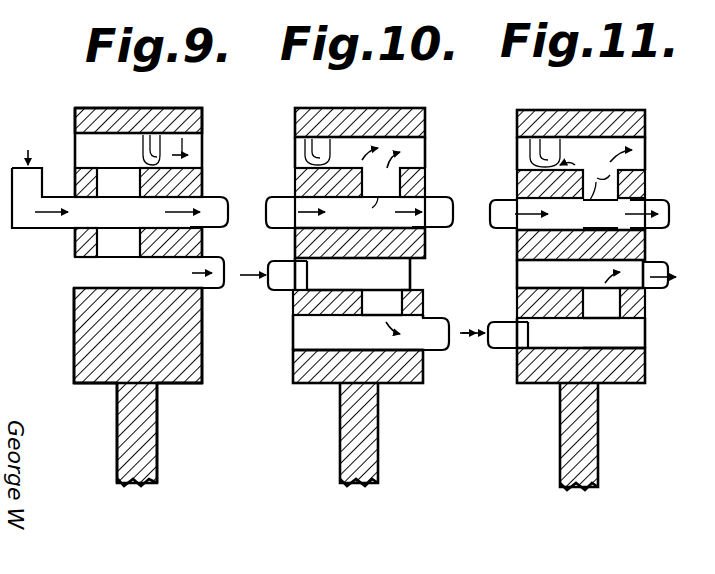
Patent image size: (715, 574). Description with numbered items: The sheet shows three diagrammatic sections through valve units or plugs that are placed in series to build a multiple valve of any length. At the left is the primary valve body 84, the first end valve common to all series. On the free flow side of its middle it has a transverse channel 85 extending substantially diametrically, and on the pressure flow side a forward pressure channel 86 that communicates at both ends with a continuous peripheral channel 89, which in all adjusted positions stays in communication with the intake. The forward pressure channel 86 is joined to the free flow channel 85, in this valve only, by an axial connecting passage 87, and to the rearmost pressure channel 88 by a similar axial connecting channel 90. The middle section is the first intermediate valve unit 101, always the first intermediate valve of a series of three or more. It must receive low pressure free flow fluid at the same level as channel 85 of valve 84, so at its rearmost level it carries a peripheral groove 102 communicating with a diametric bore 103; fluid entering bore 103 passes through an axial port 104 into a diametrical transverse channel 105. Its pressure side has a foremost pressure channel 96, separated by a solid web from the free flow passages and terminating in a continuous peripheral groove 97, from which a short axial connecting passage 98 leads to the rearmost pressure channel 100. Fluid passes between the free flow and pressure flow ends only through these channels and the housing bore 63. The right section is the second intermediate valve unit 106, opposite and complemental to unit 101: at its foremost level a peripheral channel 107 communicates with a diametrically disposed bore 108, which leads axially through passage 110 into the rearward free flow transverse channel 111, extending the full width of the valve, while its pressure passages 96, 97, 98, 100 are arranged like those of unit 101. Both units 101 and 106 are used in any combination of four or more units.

In FIG. 9, the bore 63 is at (160, 295).
In FIG. 9, the primary valve body 84 is at (95, 340).
In FIG. 9, the transverse free flow channel 85 is at (149, 273).
In FIG. 9, the forward pressure channel 86 is at (106, 189).
In FIG. 9, the axial connecting passage 87 is at (138, 243).
In FIG. 9, the rearmost pressure channel 88 is at (138, 138).
In FIG. 9, the continuous peripheral channel 89 is at (204, 200).
In FIG. 9, the axial connecting channel 90 is at (138, 183).
In FIG. 10, the foremost pressure channel 96 is at (345, 214).
In FIG. 11, the foremost pressure channel 96 is at (574, 207).
In FIG. 10, the continuous peripheral groove 97 is at (426, 198).
In FIG. 11, the continuous peripheral groove 97 is at (640, 210).
In FIG. 10, the axial connecting passage 98 is at (360, 183).
In FIG. 11, the axial connecting passage 98 is at (602, 180).
In FIG. 10, the rearmost pressure channel 100 is at (405, 148).
In FIG. 11, the rearmost pressure channel 100 is at (608, 150).
In FIG. 10, the first intermediate valve unit 101 is at (295, 118).
In FIG. 10, the peripheral groove 102 is at (300, 272).
In FIG. 10, the diametric bore 103 is at (360, 261).
In FIG. 10, the axial port 104 is at (358, 303).
In FIG. 10, the diametrical transverse channel 105 is at (384, 400).
In FIG. 11, the second intermediate valve unit 106 is at (663, 100).
In FIG. 11, the peripheral channel 107 is at (515, 332).
In FIG. 11, the diametric bore 108 is at (581, 404).
In FIG. 11, the axial passage 110 is at (581, 303).
In FIG. 11, the rearward free flow transverse channel 111 is at (596, 260).